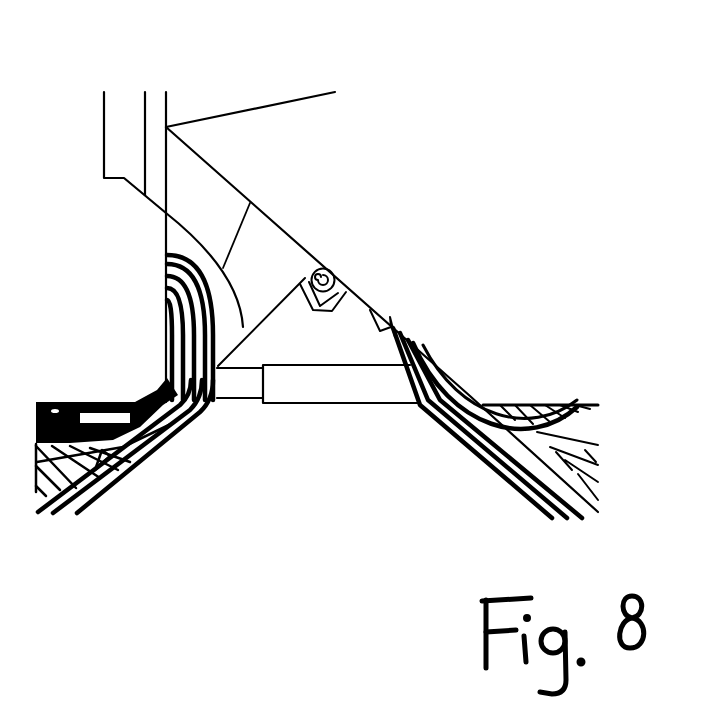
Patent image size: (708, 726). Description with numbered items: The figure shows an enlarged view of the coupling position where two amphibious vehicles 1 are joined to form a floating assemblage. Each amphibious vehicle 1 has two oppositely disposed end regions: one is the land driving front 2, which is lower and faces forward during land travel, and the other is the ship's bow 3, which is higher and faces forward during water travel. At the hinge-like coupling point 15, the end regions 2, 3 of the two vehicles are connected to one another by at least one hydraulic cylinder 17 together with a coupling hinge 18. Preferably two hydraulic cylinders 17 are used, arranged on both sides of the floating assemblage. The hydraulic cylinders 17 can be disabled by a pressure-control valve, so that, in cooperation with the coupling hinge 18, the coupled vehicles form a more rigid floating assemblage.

The amphibious vehicle 1 is at (60, 220).
The land driving front 2 is at (307, 122).
The ship's bow 3 is at (124, 100).
The coupling point 15 is at (303, 445).
The hydraulic cylinder 17 is at (368, 386).
The coupling hinge 18 is at (333, 270).